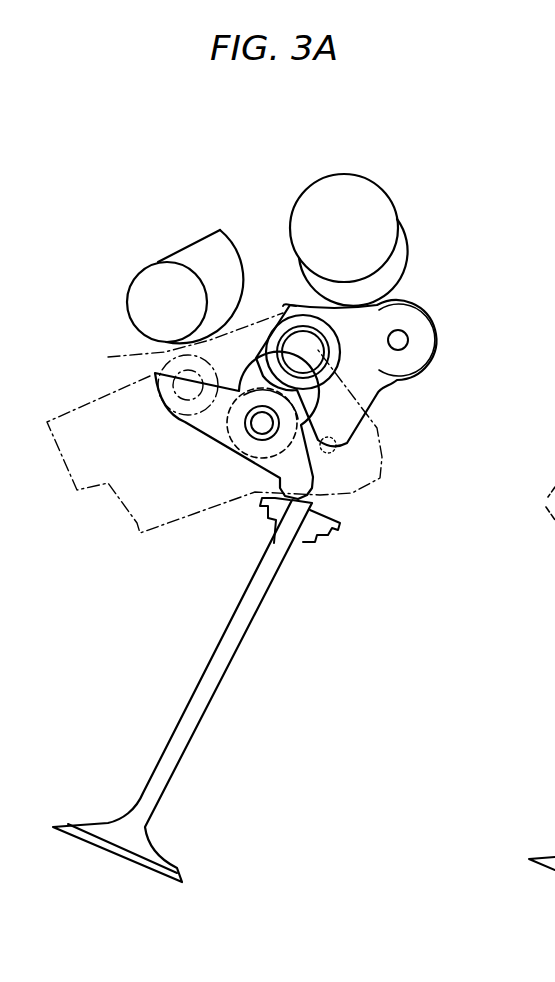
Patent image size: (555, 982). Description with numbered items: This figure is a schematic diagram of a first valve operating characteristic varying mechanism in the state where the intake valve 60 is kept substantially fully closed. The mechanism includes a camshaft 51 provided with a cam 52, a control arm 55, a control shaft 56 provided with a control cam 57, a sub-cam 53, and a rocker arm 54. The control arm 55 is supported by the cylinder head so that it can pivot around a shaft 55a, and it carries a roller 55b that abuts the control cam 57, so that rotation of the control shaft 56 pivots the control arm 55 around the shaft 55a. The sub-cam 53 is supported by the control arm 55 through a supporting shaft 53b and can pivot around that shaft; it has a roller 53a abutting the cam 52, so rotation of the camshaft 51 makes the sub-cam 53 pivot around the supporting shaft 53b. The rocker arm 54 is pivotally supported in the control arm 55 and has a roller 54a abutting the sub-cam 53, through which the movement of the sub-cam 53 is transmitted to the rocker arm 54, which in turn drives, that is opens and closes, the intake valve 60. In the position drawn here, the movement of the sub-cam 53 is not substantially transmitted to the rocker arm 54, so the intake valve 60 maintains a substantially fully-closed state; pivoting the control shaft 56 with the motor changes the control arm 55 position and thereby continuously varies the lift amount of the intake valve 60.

The camshaft 51 is at (346, 175).
The cam 52 is at (410, 253).
The sub-cam 53 is at (382, 387).
The roller 53a is at (438, 322).
The supporting shaft 53b is at (279, 314).
The rocker arm 54 is at (312, 480).
The roller 54a is at (228, 428).
The control arm 55 is at (140, 540).
The shaft 55a is at (336, 449).
The roller 55b is at (162, 356).
The control shaft 56 is at (133, 275).
The control cam 57 is at (192, 243).
The intake valve 60 is at (260, 613).